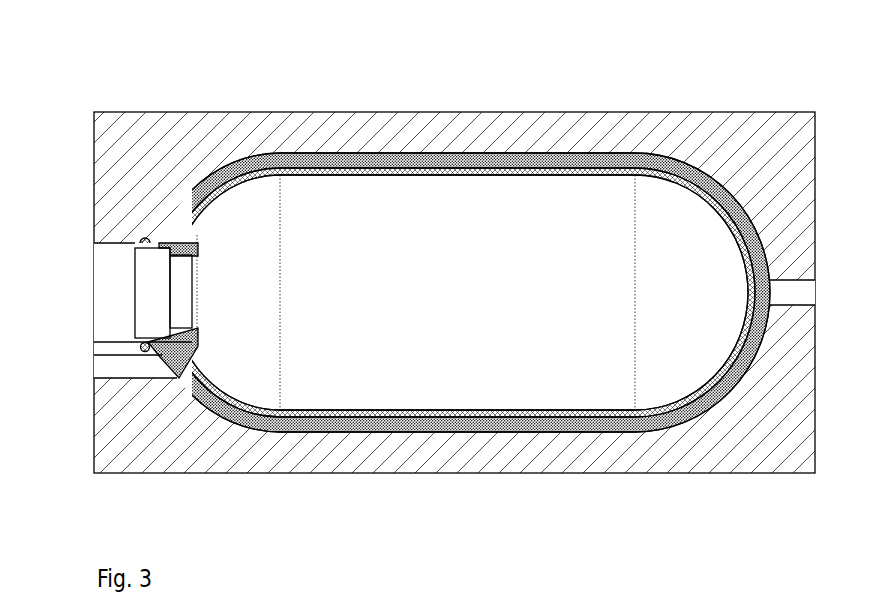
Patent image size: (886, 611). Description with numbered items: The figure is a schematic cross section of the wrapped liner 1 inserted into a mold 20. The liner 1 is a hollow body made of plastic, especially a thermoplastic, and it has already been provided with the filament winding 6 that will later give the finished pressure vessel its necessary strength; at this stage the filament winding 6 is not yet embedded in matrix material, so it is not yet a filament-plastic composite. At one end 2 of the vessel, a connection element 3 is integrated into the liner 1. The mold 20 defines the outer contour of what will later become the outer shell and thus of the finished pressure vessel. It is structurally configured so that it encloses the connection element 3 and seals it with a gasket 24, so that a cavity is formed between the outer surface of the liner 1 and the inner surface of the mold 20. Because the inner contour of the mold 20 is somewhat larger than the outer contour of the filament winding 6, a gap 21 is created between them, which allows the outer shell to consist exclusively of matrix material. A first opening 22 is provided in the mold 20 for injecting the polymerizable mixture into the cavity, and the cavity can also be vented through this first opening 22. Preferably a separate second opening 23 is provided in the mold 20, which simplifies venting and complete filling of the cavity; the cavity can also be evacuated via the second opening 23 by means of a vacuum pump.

The mold 20 is at (416, 128).
The gap 21 is at (522, 432).
The end 2 is at (215, 262).
The filament winding 6 is at (458, 423).
The liner 1 is at (344, 380).
The connection element 3 is at (135, 320).
The gasket 24 is at (140, 347).
The first opening 22 is at (117, 367).
The second opening 23 is at (808, 295).